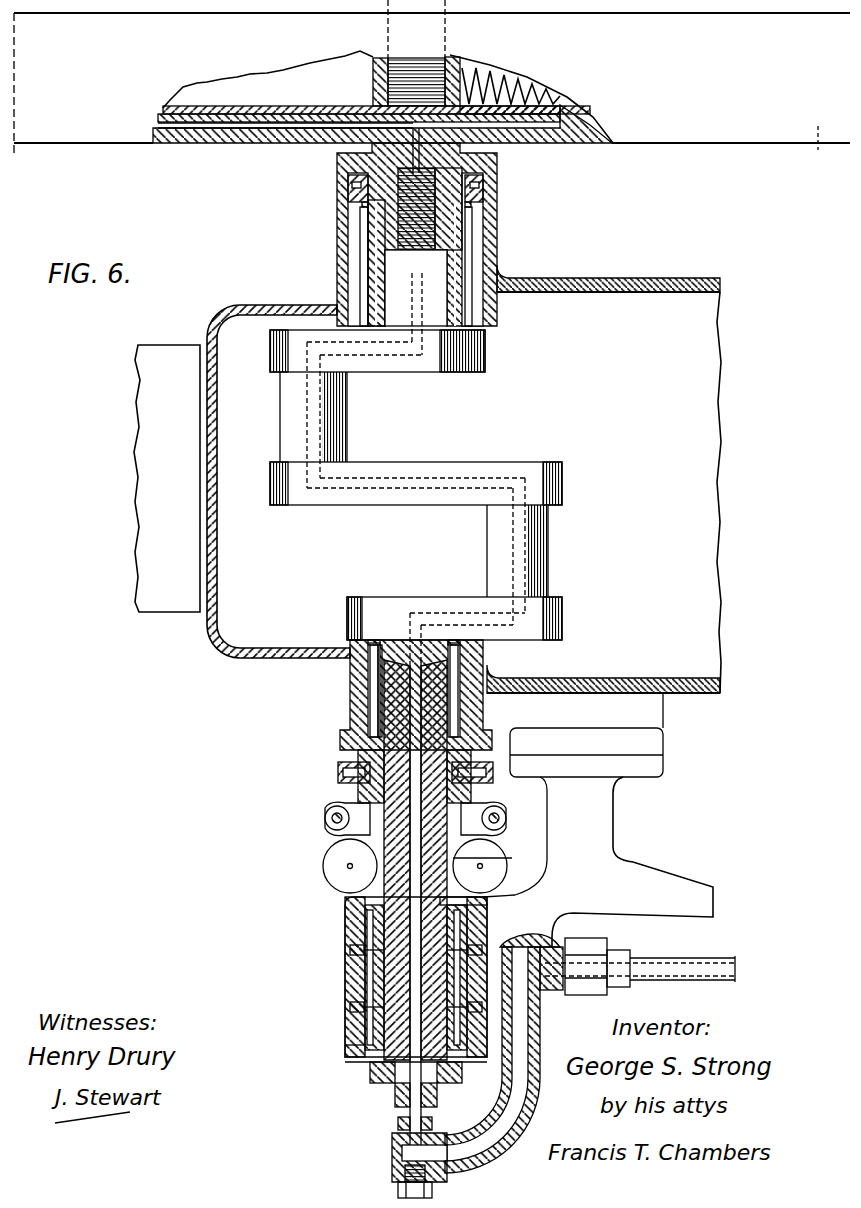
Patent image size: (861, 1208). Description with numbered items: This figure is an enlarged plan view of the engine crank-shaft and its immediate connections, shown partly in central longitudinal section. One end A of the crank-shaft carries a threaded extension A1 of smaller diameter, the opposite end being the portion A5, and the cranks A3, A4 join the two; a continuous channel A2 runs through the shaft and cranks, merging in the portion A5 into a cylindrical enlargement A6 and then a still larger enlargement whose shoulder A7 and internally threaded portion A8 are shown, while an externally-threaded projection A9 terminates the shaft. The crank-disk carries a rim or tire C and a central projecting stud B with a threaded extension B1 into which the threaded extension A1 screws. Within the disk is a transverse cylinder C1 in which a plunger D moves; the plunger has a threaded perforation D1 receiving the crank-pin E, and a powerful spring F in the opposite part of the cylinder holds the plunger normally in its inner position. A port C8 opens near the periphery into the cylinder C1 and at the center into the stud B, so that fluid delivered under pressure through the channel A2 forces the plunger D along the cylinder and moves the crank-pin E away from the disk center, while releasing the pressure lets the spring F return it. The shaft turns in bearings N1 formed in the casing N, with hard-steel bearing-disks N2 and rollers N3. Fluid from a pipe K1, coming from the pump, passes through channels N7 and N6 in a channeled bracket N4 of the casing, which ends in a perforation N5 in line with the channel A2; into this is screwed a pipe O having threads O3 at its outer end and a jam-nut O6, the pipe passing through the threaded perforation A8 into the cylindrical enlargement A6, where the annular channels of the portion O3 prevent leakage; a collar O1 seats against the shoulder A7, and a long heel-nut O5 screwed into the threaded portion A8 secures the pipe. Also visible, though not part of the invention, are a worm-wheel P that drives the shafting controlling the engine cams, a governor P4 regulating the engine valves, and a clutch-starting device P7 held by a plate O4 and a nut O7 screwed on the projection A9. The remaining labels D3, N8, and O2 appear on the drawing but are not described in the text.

The rim C is at (270, 145).
The port C8 is at (245, 118).
The cylinder C1 is at (585, 114).
The plunger D is at (388, 97).
The threaded perforation D1 is at (452, 68).
The cap flange D3 is at (513, 114).
The crank-pin E is at (382, 64).
The spring F is at (545, 112).
The casing N is at (607, 290).
The bearings N1 is at (360, 222).
The hard-steel bearing-disks N2 is at (376, 292).
The rollers N3 is at (352, 195).
The bracket N4 is at (515, 1122).
The perforation N5 is at (395, 1145).
The channel N6 is at (502, 1053).
The channel N7 is at (553, 973).
The casing block N8 is at (167, 478).
The worm-wheel P is at (352, 183).
The governor P4 is at (400, 780).
The clutch-starting device P7 is at (338, 1015).
The stud B is at (407, 209).
The threaded extension B1 is at (455, 216).
The crank-shaft end A is at (416, 473).
The threaded extension A1 is at (416, 302).
The channel A2 is at (418, 303).
The crank A3 is at (292, 410).
The crank A4 is at (545, 540).
The crank-shaft end portion A5 is at (398, 665).
The cylindrical enlargement A6 is at (470, 795).
The shoulder A7 is at (390, 910).
The internally threaded portion A8 is at (395, 962).
The externally-threaded projection A9 is at (395, 1092).
The pipe O is at (365, 1026).
The collar O1 is at (455, 913).
The rollers O2 is at (429, 847).
The threads O3 is at (400, 1120).
The plate O4 is at (455, 1072).
The heel-nut O5 is at (437, 1097).
The jam-nut O6 is at (432, 1122).
The nut O7 is at (372, 1072).
The pipe K1 is at (672, 952).